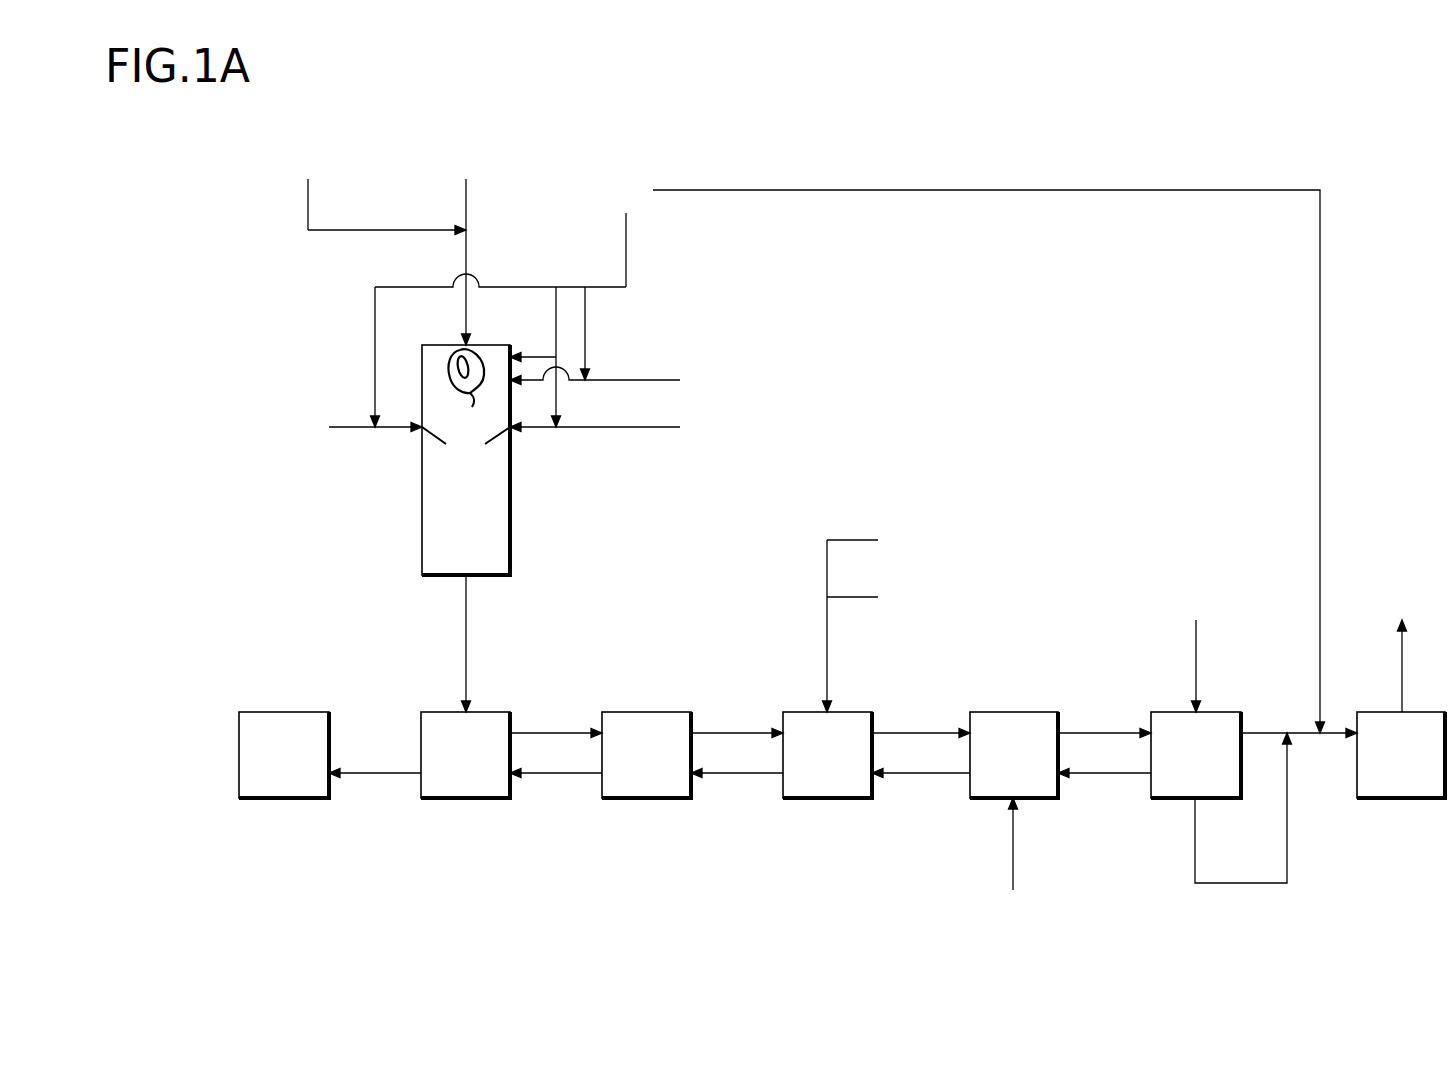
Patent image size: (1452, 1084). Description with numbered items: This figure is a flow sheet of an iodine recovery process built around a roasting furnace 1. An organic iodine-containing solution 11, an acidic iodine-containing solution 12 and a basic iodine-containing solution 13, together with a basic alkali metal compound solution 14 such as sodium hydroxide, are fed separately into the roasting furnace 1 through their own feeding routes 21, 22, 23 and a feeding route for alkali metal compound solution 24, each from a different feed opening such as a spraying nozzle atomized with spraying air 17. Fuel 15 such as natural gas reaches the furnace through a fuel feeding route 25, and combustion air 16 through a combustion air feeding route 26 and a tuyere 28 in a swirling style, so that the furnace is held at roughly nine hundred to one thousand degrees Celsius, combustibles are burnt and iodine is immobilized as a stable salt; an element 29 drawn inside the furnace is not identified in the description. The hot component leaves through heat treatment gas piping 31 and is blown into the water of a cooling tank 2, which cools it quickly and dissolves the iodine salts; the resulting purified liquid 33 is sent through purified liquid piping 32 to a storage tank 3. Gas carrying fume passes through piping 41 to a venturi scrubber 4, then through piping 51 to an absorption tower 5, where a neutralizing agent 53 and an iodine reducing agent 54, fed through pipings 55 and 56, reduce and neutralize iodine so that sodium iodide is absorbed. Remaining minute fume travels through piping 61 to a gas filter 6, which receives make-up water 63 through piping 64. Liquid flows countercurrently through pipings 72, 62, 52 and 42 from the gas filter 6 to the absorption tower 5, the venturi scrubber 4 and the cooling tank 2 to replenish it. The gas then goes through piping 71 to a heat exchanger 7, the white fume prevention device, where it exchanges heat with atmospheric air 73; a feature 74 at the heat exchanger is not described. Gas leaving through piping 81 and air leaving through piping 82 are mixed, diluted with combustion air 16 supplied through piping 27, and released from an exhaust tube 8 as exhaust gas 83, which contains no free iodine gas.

The roasting furnace 1 is at (421, 500).
The cooling tank 2 is at (491, 712).
The storage tank 3 is at (295, 712).
The venturi scrubber 4 is at (671, 712).
The absorption tower 5 is at (866, 712).
The gas filter 6 is at (1041, 712).
The heat exchanger 7 is at (1223, 712).
The exhaust tube 8 is at (1428, 712).
The organic iodine-containing solution 11 is at (466, 240).
The acidic iodine-containing solution 12 is at (333, 427).
The basic iodine-containing solution 13 is at (635, 427).
The basic alkali metal compound solution 14 is at (635, 380).
The fuel 15 is at (311, 183).
The combustion air 16 is at (622, 230).
The spraying air 17 is at (503, 290).
The feeding route for iodine-containing solution 21 is at (467, 240).
The feeding route for iodine-containing solution 22 is at (342, 430).
The feeding route for iodine-containing solution 23 is at (640, 430).
The feeding route for alkali metal compound solution 24 is at (645, 378).
The fuel feeding route 25 is at (346, 231).
The combustion air feeding route 26 is at (627, 240).
The piping 27 is at (1058, 190).
The tuyere 28 is at (511, 345).
The catalyst 29 is at (450, 372).
The heat treatment gas piping 31 is at (463, 637).
The purified liquid piping 32 is at (369, 775).
The purified liquid 33 is at (280, 781).
The piping 41 is at (567, 732).
The piping 42 is at (554, 775).
The piping 51 is at (746, 732).
The piping 52 is at (734, 775).
The neutralizing agent 53 is at (871, 539).
The iodine reducing agent 54 is at (871, 597).
The piping 55 is at (850, 540).
The piping 56 is at (858, 600).
The piping 61 is at (918, 732).
The piping 62 is at (904, 775).
The make-up water 63 is at (1012, 866).
The piping 64 is at (1011, 856).
The piping 71 is at (1115, 732).
The piping 72 is at (1103, 775).
The atmospheric air 73 is at (1197, 645).
The line 74 is at (1194, 645).
The piping 81 is at (1330, 732).
The piping 82 is at (1250, 884).
The exhaust gas 83 is at (1402, 645).